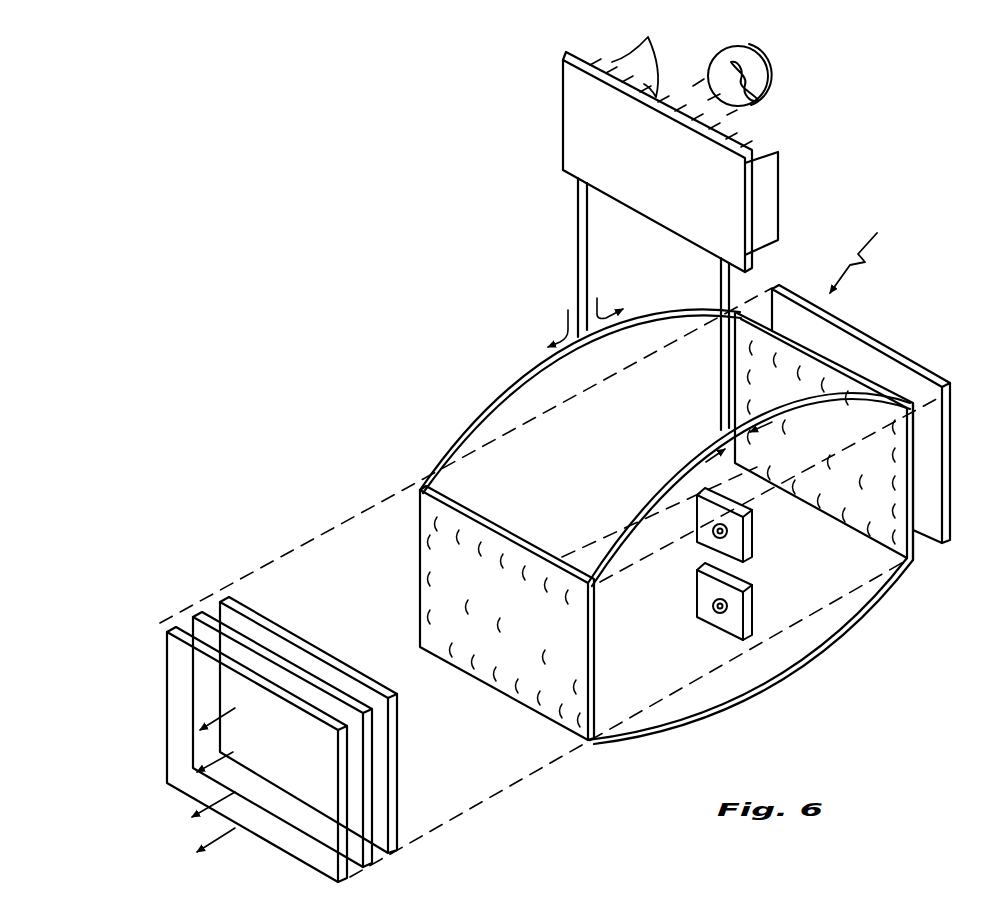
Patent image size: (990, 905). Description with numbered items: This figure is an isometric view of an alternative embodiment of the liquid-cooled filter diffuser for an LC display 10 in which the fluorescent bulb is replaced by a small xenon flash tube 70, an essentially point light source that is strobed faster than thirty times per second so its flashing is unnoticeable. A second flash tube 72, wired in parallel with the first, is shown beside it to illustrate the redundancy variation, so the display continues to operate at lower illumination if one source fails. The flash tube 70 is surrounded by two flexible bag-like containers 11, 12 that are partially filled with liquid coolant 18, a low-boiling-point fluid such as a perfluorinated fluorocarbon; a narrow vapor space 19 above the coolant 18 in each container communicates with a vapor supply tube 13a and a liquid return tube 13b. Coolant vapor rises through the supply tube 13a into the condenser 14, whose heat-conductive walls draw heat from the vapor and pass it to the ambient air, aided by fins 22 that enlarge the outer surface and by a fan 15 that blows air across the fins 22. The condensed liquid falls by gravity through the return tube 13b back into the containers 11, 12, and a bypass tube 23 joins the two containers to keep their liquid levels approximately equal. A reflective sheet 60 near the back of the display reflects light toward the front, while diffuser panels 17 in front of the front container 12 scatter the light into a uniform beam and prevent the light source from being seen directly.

The liquid-cooled filter diffuser for an LC display 10 is at (866, 251).
The flexible bag-like container 11 is at (915, 538).
The flexible bag-like container 12 is at (515, 698).
The vapor supply tube 13a is at (690, 457).
The liquid return tube 13b is at (512, 386).
The condenser 14 is at (568, 97).
The fan 15 is at (770, 50).
The diffuser panels 17 is at (193, 608).
The liquid coolant 18 is at (420, 596).
The vapor space 19 is at (420, 543).
The fins 22 is at (674, 64).
The bypass tube 23 is at (712, 714).
The reflective sheet 60 is at (893, 347).
The xenon flash tube 70 is at (755, 613).
The second flash tube 72 is at (755, 539).